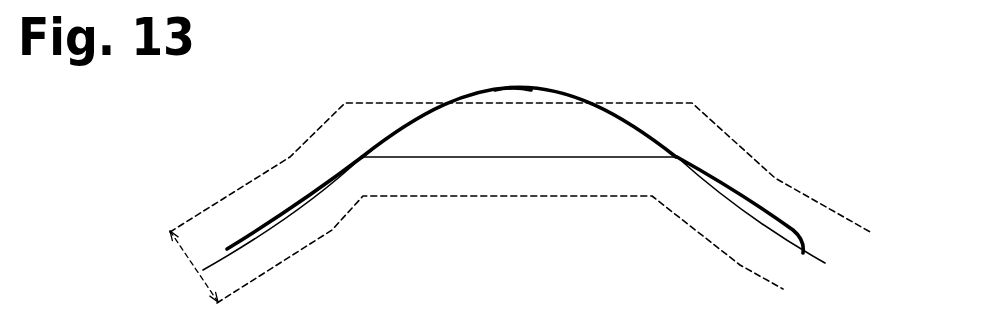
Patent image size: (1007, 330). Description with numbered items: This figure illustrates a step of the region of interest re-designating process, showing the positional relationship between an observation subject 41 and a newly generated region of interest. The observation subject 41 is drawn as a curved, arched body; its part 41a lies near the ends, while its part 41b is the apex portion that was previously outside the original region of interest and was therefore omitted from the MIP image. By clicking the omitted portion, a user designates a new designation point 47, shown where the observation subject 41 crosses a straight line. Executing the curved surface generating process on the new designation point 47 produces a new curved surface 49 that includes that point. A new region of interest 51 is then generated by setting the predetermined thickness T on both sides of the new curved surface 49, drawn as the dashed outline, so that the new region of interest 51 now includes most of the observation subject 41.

The observation subject 41 is at (558, 93).
The part of observation subject 41a is at (312, 190).
The part of observation subject 41b is at (504, 86).
The new designation point 47 is at (362, 156).
The new curved surface 49 is at (753, 221).
The new region of interest 51 is at (775, 178).
The thickness T is at (192, 266).